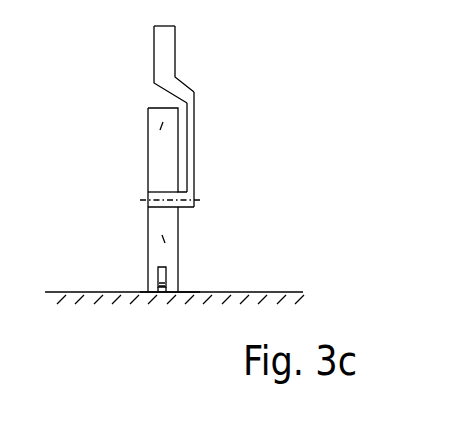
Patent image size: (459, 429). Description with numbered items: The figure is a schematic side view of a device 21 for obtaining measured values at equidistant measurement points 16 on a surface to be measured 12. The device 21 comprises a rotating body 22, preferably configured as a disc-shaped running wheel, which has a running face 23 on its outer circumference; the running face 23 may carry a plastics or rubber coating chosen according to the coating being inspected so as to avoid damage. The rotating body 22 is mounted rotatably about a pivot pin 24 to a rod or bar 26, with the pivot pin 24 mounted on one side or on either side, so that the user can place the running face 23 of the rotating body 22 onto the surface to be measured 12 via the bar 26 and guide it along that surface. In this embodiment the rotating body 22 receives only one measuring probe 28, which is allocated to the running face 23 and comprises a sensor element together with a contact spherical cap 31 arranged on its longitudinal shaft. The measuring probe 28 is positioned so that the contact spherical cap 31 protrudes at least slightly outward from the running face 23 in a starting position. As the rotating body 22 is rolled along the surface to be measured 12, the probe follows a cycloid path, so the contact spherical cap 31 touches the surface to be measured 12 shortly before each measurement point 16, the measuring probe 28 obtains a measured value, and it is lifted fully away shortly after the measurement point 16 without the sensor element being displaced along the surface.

The surface to be measured 12 is at (258, 291).
The equidistant measurement points 16 is at (168, 298).
The device 21 is at (131, 145).
The rotating body 22 is at (144, 242).
The running face 23 is at (160, 130).
The pivot pin 24 is at (142, 201).
The bar 26 is at (163, 55).
The measuring probe 28 is at (171, 274).
The contact spherical cap 31 is at (160, 297).